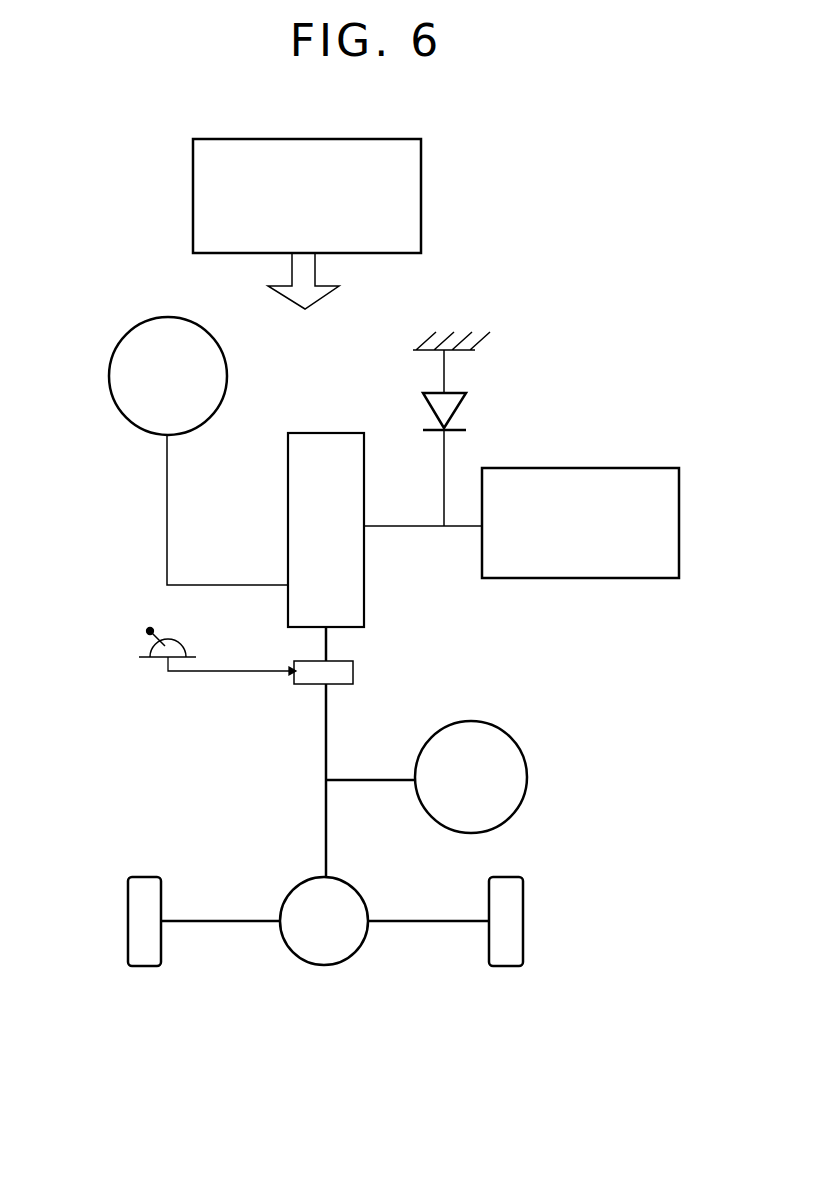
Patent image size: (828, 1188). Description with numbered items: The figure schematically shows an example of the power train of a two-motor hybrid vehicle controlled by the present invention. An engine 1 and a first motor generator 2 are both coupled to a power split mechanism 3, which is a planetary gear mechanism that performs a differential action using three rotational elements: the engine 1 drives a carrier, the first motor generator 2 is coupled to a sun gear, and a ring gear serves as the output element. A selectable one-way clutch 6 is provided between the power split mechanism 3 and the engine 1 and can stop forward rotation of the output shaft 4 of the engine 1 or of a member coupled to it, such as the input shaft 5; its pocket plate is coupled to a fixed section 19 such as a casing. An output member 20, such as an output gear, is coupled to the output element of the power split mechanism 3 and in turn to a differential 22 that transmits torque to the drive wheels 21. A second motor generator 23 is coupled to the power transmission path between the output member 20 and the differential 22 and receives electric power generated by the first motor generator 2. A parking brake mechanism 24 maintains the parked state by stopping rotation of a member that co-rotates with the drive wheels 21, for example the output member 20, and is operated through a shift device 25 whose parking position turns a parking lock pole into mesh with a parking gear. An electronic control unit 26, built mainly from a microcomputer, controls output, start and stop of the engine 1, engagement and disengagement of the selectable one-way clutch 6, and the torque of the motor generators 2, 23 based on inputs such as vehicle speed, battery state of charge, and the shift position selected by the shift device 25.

The engine 1 is at (600, 468).
The first motor generator 2 is at (107, 379).
The power split mechanism 3 is at (364, 601).
The output shaft 4 is at (450, 526).
The input shaft 5 is at (401, 524).
The selectable one-way clutch 6 is at (458, 413).
The fixed section 19 is at (451, 340).
The output member 20 is at (322, 738).
The drive wheels 21 is at (146, 877).
The differential 22 is at (322, 966).
The second motor generator 23 is at (527, 778).
The parking brake mechanism 24 is at (353, 671).
The shift device 25 is at (157, 660).
The electronic control unit 26 is at (421, 197).